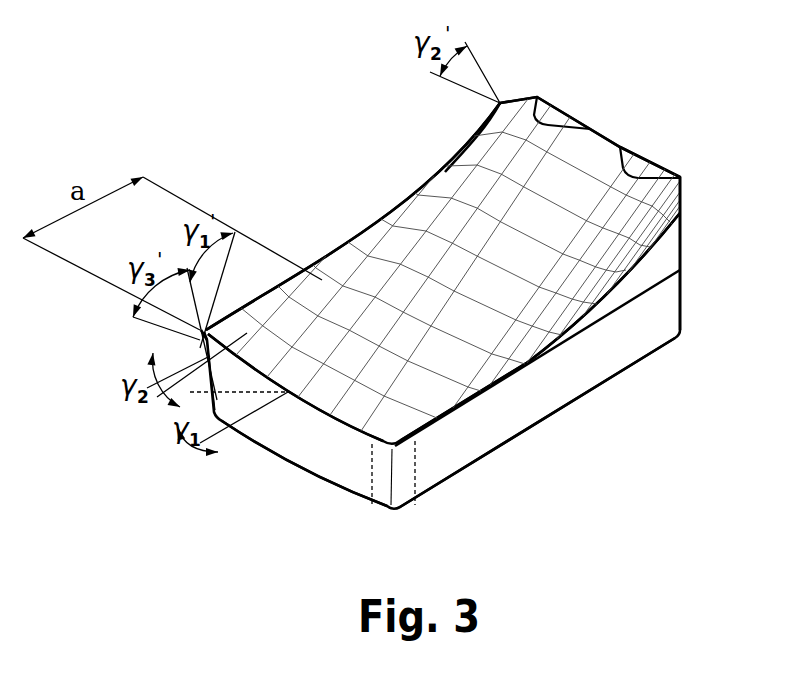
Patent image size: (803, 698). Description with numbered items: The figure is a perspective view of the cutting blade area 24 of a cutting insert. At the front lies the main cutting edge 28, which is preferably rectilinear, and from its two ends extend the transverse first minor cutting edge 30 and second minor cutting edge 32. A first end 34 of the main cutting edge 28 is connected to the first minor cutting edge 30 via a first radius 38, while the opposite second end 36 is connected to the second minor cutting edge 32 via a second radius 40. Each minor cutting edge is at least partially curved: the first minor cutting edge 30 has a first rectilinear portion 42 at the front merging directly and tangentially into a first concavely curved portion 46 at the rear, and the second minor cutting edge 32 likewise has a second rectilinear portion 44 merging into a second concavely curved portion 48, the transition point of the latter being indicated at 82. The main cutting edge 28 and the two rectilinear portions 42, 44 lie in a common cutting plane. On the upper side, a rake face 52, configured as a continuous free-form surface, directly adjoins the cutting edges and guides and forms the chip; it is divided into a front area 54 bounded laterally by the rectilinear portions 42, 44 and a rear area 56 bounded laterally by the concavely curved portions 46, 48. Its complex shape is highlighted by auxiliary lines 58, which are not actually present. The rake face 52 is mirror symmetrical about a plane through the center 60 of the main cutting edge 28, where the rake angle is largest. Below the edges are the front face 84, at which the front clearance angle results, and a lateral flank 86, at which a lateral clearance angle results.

The cutting blade area 24 is at (253, 97).
The main cutting edge 28 is at (290, 390).
The first minor cutting edge 30 is at (543, 356).
The second minor cutting edge 32 is at (398, 208).
The first end 34 is at (372, 447).
The second end 36 is at (200, 345).
The first radius 38 is at (395, 449).
The second radius 40 is at (203, 323).
The first rectilinear portion 42 is at (458, 406).
The second rectilinear portion 44 is at (250, 293).
The first concavely curved portion 46 is at (647, 257).
The second concavely curved portion 48 is at (460, 148).
The rake face 52 is at (500, 233).
The front area 54 is at (417, 367).
The rear area 56 is at (581, 210).
The auxiliary lines 58 is at (633, 227).
The center 60 is at (287, 395).
The transition point 82 is at (320, 280).
The front face 84 is at (320, 462).
The lateral flank 86 is at (637, 333).